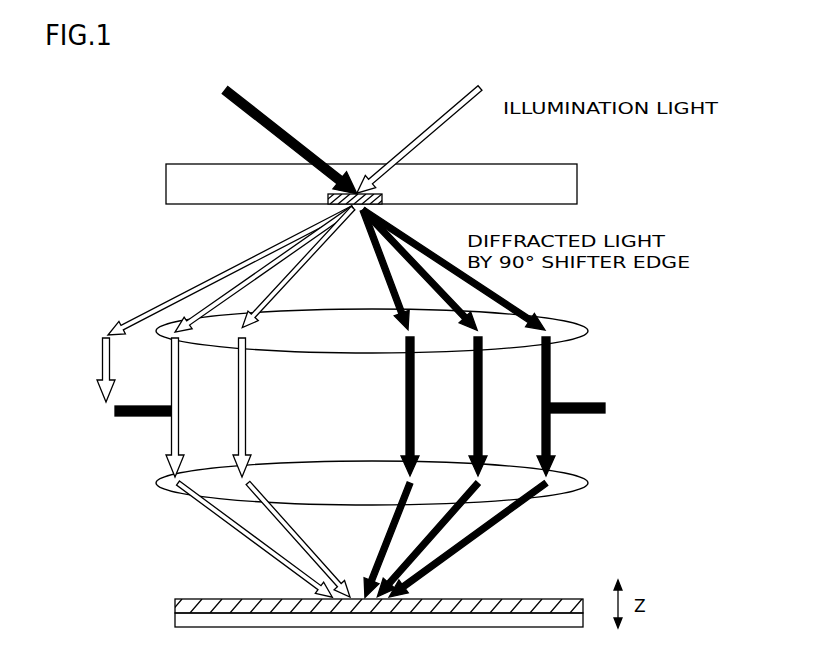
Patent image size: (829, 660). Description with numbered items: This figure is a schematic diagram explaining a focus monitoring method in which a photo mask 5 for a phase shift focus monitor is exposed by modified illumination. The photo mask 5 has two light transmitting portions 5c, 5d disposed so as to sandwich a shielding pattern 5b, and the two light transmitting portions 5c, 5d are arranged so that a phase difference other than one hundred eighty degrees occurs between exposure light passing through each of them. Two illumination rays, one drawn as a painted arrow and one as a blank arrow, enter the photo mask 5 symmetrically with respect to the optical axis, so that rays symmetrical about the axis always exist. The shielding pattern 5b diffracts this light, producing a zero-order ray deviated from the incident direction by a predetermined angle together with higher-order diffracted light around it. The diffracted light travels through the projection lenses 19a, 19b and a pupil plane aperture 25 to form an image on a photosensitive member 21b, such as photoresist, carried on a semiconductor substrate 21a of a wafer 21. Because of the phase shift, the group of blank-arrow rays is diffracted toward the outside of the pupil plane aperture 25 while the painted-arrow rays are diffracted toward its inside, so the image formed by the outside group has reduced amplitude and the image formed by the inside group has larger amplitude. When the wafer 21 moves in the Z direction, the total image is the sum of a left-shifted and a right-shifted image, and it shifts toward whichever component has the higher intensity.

The photo mask 5 is at (560, 175).
The shielding pattern 5b is at (387, 198).
The light transmitting portion 5c is at (199, 203).
The light transmitting portion 5d is at (524, 203).
The projection lens 19a is at (563, 318).
The projection lens 19b is at (565, 472).
The pupil plane aperture 25 is at (565, 401).
The wafer 21 is at (328, 613).
The semiconductor substrate 21a is at (175, 620).
The photosensitive member 21b is at (175, 606).